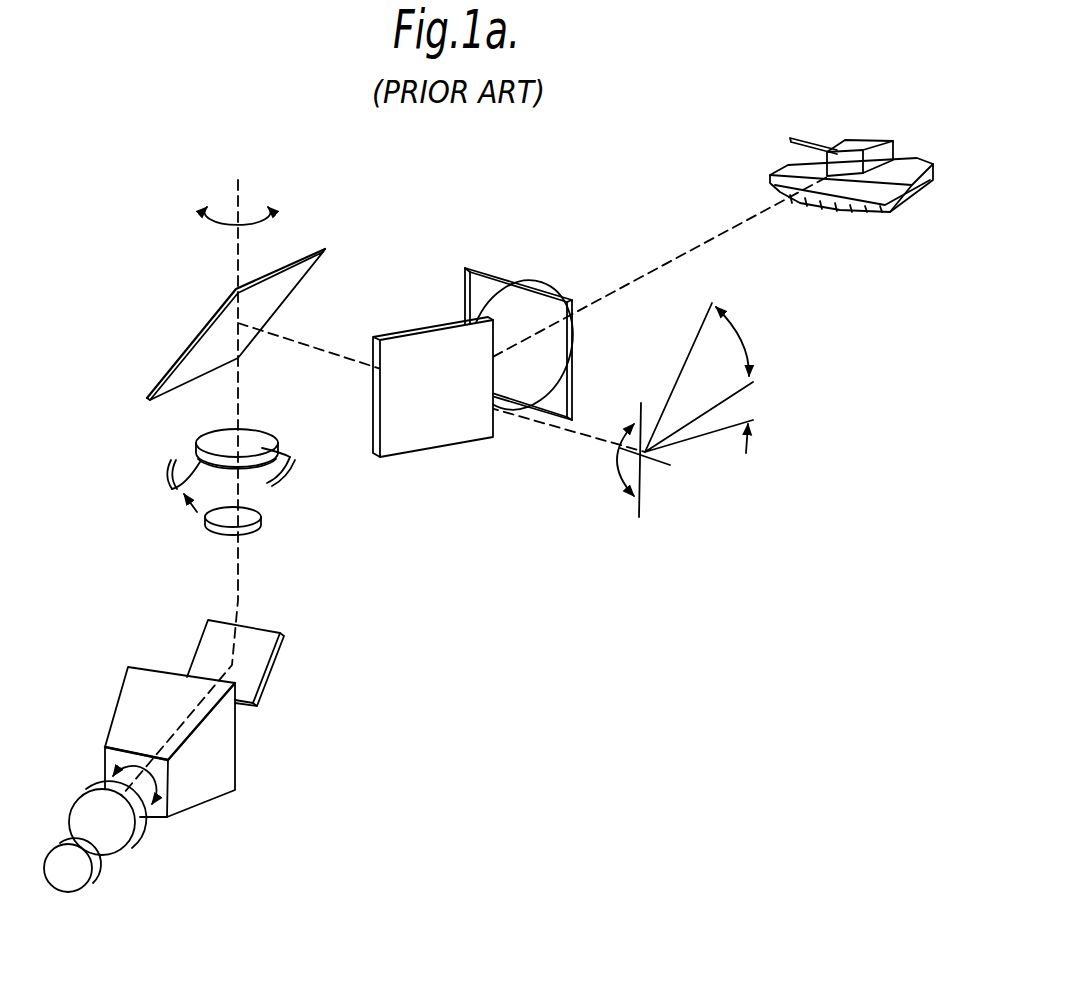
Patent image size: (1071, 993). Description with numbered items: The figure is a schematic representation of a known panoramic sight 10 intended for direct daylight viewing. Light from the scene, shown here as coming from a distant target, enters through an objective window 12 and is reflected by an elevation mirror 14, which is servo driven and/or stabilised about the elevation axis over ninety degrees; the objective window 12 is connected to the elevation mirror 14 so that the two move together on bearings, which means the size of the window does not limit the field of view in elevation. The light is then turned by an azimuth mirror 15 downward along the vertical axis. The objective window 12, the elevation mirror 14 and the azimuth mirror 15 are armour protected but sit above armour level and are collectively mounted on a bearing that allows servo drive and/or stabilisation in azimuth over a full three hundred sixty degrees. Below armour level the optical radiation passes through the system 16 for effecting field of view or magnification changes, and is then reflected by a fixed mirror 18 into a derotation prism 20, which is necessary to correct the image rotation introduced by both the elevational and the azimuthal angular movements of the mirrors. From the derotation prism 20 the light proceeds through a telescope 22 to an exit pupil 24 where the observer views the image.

The panoramic sight 10 is at (203, 138).
The objective window 12 is at (493, 282).
The elevation mirror 14 is at (435, 438).
The azimuth mirror 15 is at (177, 370).
The system for effecting field of view or magnification changes 16 is at (170, 490).
The fixed mirror 18 is at (253, 668).
The derotation prism 20 is at (197, 768).
The telescope 22 is at (133, 845).
The exit pupil 24 is at (87, 880).